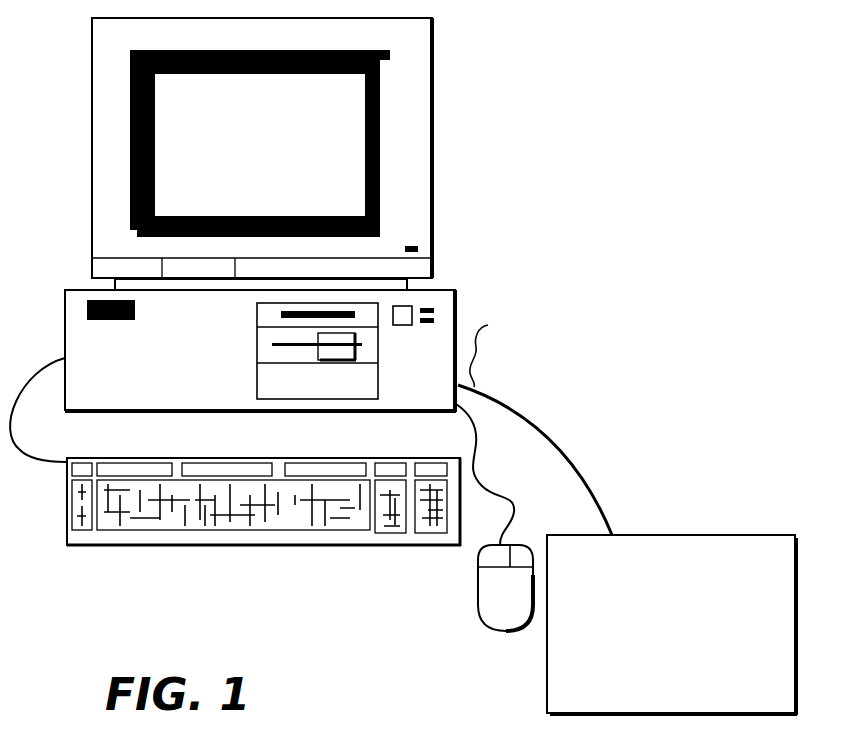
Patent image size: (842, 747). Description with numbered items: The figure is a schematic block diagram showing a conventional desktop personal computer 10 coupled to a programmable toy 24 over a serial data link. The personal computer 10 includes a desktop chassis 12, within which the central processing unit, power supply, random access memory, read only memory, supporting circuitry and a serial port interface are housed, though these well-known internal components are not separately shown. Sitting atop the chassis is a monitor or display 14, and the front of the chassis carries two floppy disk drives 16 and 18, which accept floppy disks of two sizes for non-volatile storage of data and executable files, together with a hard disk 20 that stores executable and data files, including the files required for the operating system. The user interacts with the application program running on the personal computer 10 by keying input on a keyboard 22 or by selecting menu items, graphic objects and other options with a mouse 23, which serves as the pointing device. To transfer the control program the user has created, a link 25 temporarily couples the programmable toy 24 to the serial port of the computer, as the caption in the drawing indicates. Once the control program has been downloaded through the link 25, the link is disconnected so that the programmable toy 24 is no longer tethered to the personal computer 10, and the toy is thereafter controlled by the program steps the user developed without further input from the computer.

The personal computer 10 is at (80, 567).
The desktop chassis 12 is at (456, 293).
The monitor 14 is at (435, 126).
The floppy disk drive 16 is at (257, 317).
The floppy disk drive 18 is at (257, 349).
The hard disk 20 is at (257, 386).
The keyboard 22 is at (325, 547).
The mouse 23 is at (480, 606).
The programmable toy 24 is at (684, 535).
The link 25 is at (546, 427).